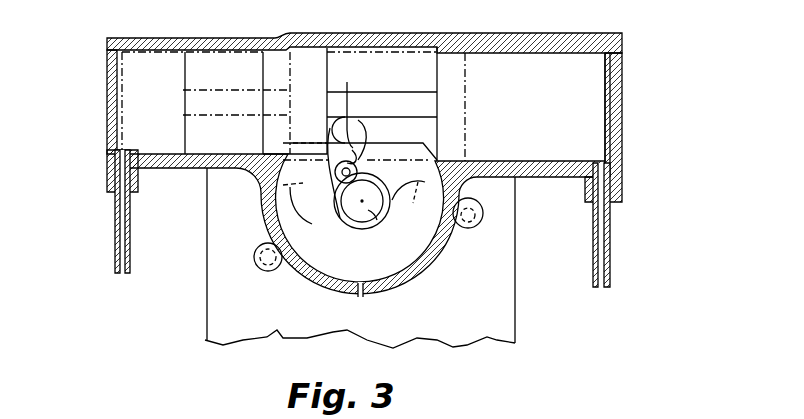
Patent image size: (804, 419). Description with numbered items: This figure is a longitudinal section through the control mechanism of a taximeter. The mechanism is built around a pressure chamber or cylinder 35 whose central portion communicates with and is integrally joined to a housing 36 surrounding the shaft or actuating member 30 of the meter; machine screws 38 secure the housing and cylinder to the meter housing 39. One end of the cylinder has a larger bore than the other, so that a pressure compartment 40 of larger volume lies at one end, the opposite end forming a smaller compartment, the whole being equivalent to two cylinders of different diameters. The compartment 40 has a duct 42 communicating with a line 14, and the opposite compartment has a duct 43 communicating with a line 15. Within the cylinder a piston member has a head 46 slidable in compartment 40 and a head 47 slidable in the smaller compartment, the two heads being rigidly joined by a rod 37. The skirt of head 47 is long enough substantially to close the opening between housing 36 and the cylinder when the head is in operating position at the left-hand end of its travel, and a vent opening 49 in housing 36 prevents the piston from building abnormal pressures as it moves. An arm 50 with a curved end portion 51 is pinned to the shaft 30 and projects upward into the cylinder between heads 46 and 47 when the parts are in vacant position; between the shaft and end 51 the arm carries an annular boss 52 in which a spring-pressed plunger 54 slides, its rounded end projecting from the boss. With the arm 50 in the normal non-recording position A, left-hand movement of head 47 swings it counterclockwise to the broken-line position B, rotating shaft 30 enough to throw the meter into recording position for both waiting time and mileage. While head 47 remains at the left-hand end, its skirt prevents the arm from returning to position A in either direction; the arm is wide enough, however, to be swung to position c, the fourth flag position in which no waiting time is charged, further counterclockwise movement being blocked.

The pressure compartment 40 is at (114, 52).
The piston head 46 is at (308, 67).
The pressure chamber or cylinder 35 is at (428, 36).
The piston head 47 is at (535, 62).
The rod 37 is at (375, 102).
The curved end portion 51 is at (368, 118).
The arm 50 is at (355, 150).
The spring-pressed plunger 54 is at (335, 173).
The annular boss 52 is at (345, 185).
The shaft or actuating member 30 is at (373, 211).
The housing 36 is at (430, 264).
The vent opening 49 is at (361, 297).
The machine screws 38 is at (258, 263).
The meter housing 39 is at (497, 243).
The duct 42 is at (107, 164).
The line 14 is at (115, 250).
The duct 43 is at (603, 168).
The line 15 is at (610, 243).
The normal or non-recording position A is at (346, 105).
The recording position B is at (268, 190).
The fourth flag position c is at (412, 203).